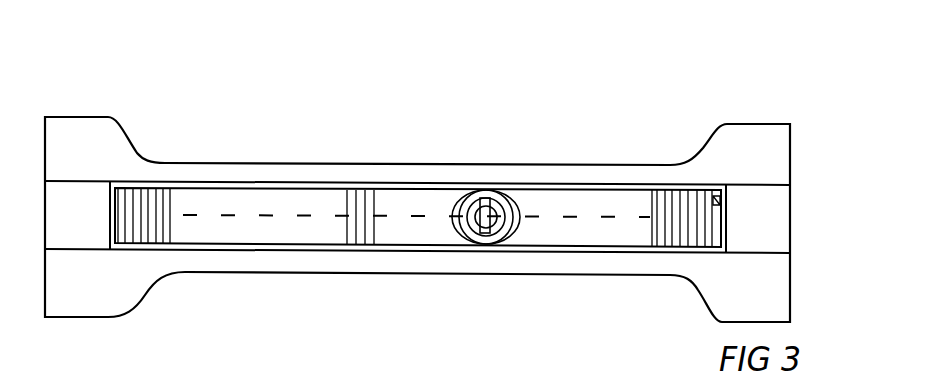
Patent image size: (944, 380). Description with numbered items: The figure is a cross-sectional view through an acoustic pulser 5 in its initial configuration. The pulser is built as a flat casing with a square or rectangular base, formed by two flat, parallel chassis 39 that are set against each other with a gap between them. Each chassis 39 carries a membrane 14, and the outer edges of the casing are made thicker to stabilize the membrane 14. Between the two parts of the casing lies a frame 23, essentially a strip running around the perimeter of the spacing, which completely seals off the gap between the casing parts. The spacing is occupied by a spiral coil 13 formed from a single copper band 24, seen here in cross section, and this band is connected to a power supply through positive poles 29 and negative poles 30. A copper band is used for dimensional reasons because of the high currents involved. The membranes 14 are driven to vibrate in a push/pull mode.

The acoustic pulser 5 is at (212, 140).
The coil 13 is at (558, 233).
The membrane 14 is at (263, 178).
The frame 23 is at (765, 223).
The copper band 24 is at (486, 228).
The positive pole 29 is at (458, 194).
The negative pole 30 is at (712, 200).
The chassis 39 is at (765, 155).